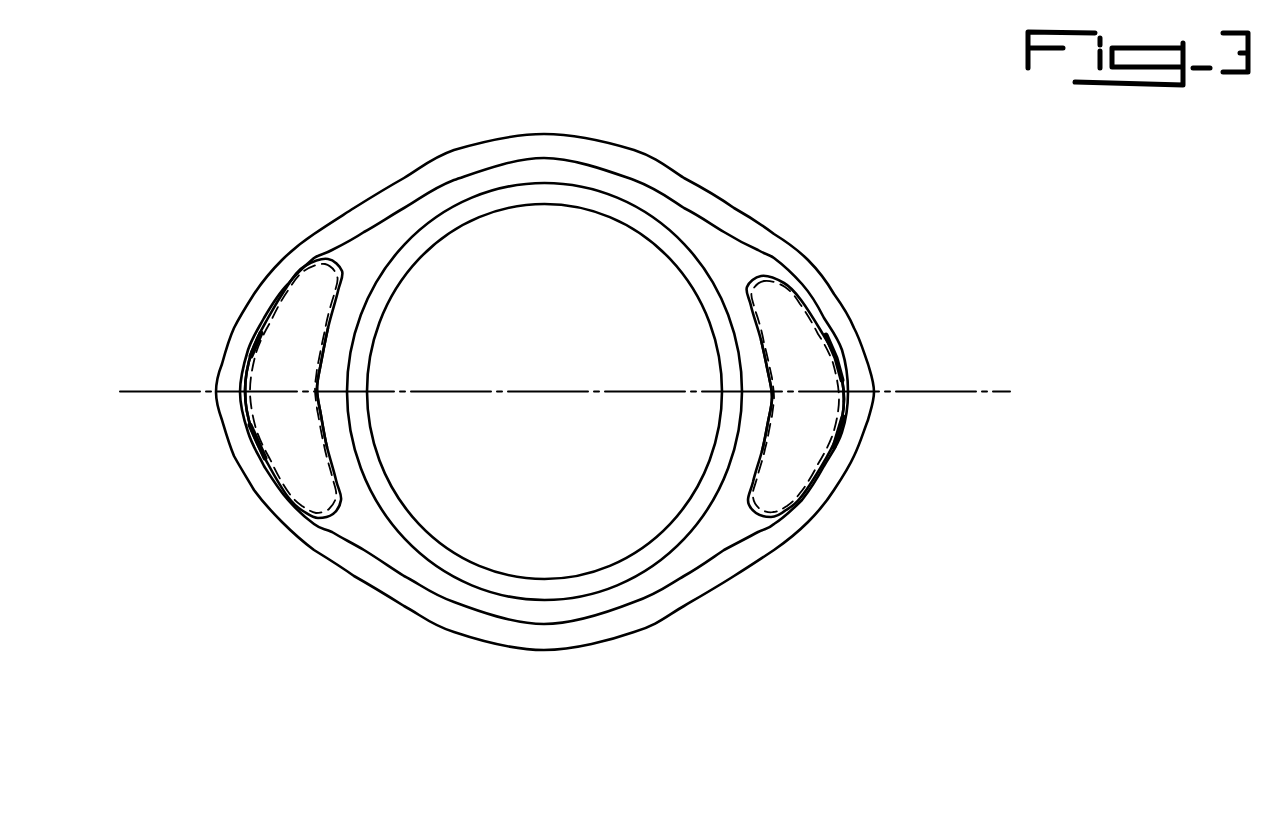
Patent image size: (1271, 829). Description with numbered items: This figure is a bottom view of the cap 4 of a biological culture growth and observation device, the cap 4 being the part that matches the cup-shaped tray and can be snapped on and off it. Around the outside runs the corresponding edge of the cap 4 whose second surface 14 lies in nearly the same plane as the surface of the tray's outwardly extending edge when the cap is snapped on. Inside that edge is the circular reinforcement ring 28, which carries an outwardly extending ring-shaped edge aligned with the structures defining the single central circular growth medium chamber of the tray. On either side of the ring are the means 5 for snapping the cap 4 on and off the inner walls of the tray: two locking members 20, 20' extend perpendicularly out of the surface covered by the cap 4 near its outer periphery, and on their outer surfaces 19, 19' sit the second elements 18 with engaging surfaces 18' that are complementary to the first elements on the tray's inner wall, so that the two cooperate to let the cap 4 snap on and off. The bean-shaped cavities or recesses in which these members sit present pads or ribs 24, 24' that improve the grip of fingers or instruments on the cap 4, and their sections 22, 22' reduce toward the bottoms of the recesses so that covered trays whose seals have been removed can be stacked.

The cap 4 is at (318, 140).
The second surface 14 is at (555, 147).
The circular reinforcement ring 28 is at (578, 587).
The means to snap on/off 5 is at (236, 355).
The locking member 20 is at (202, 436).
The locking member 20' is at (879, 419).
The grip-improving means 24 is at (201, 388).
The grip-improving means 24' is at (882, 396).
The second element 18 is at (167, 402).
The engaging surface 18' is at (916, 360).
The outer surface 19 is at (165, 434).
The outer surface 19' is at (918, 439).
The section 22 is at (195, 445).
The section 22' is at (888, 475).